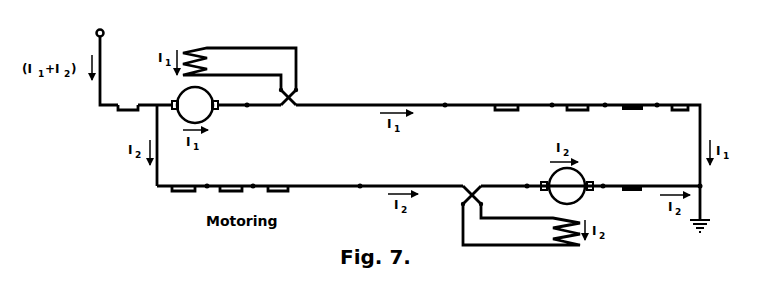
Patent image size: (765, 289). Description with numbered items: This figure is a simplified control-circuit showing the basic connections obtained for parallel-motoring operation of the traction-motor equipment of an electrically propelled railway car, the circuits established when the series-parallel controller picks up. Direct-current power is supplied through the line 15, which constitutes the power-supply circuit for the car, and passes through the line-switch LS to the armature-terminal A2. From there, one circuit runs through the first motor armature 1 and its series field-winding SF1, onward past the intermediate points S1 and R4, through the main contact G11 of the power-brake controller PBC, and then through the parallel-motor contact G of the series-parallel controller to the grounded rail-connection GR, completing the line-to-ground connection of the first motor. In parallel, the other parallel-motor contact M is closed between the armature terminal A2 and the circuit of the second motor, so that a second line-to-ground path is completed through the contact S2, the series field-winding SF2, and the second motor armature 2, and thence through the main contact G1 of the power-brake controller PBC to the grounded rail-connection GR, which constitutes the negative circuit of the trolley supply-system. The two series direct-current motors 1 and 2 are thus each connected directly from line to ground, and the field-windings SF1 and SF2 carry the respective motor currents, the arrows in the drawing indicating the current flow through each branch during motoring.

The line 15 is at (98, 71).
The line-switch LS is at (128, 98).
The armature-terminal A2 is at (152, 140).
The motor-armature 1 is at (195, 105).
The motor-armature 2 is at (567, 186).
The series field-winding SF1 is at (239, 60).
The series field-winding SF2 is at (521, 233).
The intermediate terminal S1 is at (506, 98).
The series contact S2 is at (278, 179).
The intermediate terminal R4 is at (404, 139).
The main contact of the power-brake controller G11 is at (632, 98).
The main contact of the power-brake controller G1 is at (632, 180).
The parallel-motor contact G is at (680, 98).
The parallel-motor contact M is at (183, 179).
The power-brake controller PBC is at (632, 160).
The grounded rail-connection GR is at (710, 206).